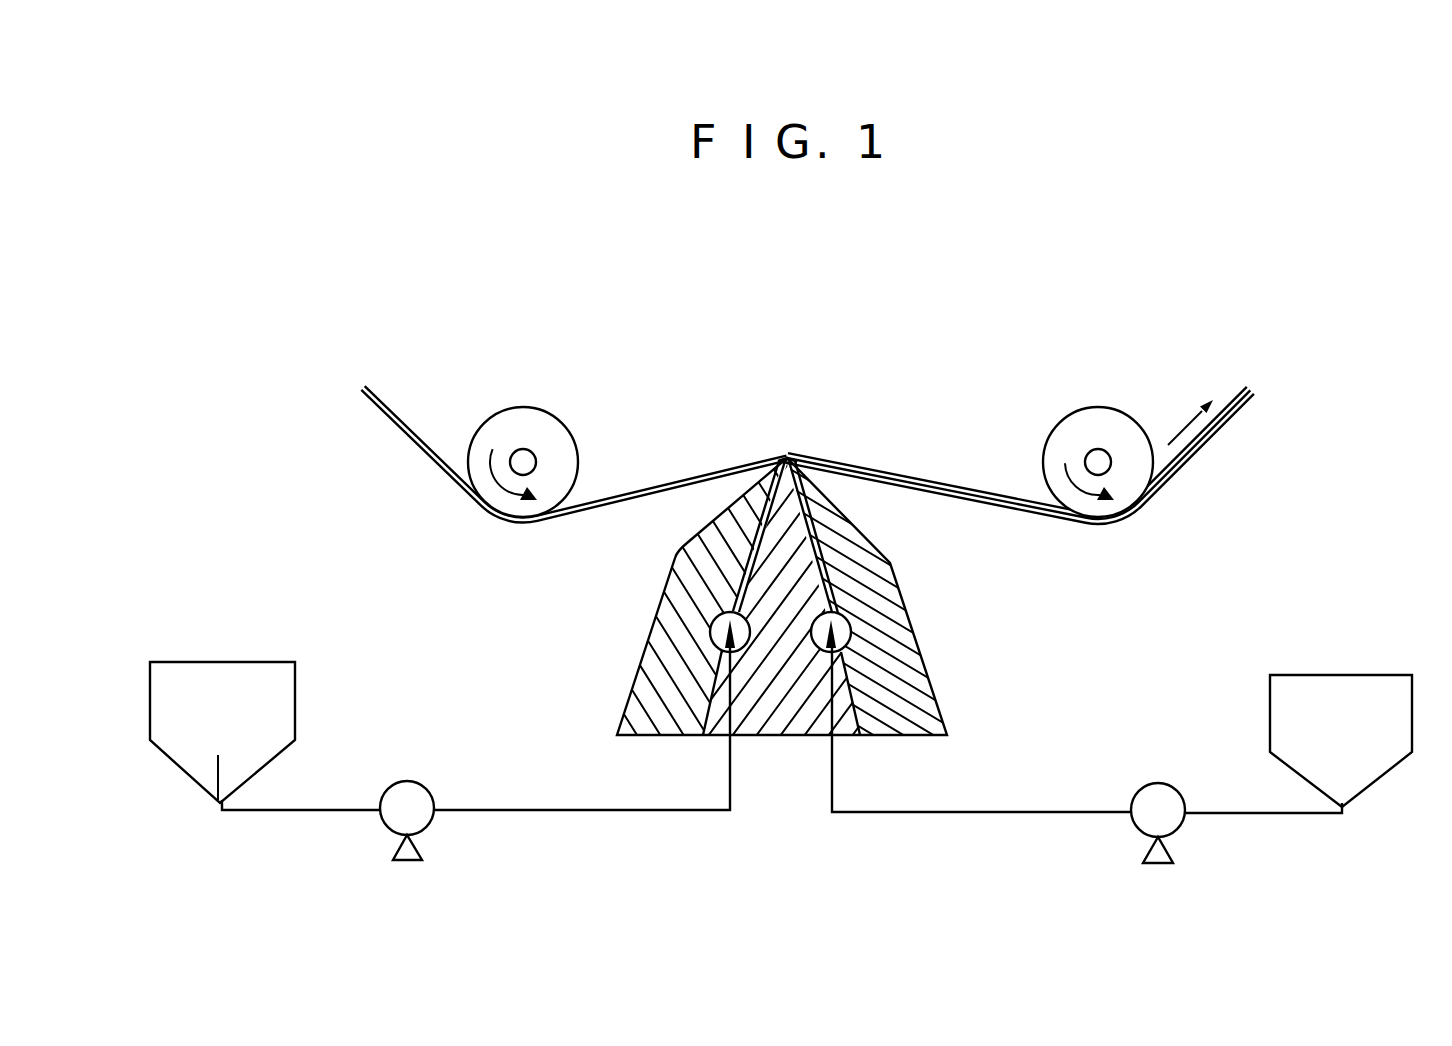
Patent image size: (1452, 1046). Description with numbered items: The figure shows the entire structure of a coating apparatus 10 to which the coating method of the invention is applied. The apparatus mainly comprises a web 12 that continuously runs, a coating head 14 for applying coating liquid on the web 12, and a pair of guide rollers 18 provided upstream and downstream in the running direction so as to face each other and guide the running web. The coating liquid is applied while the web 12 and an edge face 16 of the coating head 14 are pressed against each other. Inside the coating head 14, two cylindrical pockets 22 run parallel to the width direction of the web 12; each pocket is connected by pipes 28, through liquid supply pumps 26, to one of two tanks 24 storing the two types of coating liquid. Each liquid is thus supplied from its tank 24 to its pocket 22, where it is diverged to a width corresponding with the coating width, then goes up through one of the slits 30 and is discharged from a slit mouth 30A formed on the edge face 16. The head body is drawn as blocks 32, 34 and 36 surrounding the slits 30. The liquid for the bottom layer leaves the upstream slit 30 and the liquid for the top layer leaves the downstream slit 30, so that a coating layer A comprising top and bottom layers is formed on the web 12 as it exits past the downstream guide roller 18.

The coating apparatus 10 is at (1083, 325).
The web 12 is at (405, 425).
The coating head 14 is at (942, 639).
The edge face 16 is at (787, 448).
The guide rollers 18 is at (571, 441).
The pockets 22 is at (711, 630).
The tanks 24 is at (230, 688).
The liquid supply pumps 26 is at (430, 790).
The pipes 28 is at (594, 812).
The slits 30 is at (757, 540).
The slit mouths 30A is at (797, 458).
The first die block 32 is at (690, 582).
The middle die block 34 is at (775, 723).
The second die block 36 is at (925, 710).
The coating layer A is at (1166, 484).